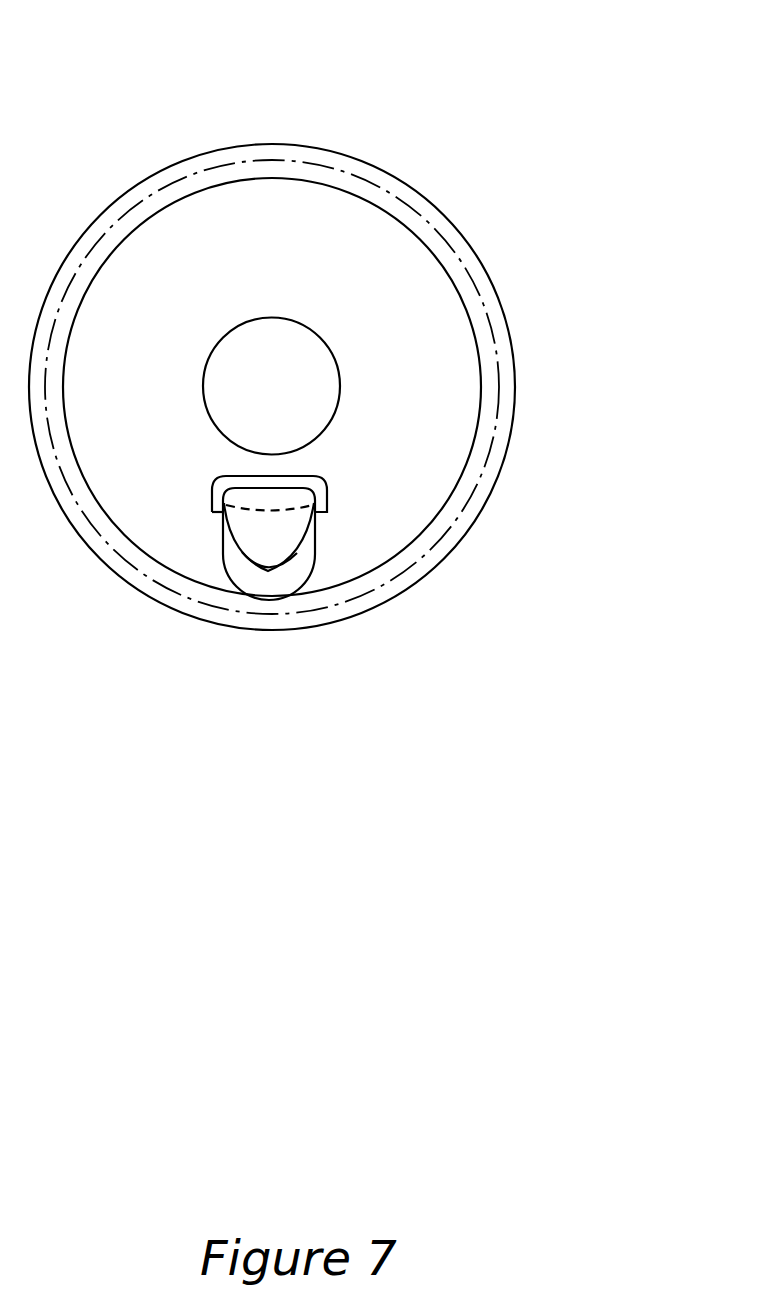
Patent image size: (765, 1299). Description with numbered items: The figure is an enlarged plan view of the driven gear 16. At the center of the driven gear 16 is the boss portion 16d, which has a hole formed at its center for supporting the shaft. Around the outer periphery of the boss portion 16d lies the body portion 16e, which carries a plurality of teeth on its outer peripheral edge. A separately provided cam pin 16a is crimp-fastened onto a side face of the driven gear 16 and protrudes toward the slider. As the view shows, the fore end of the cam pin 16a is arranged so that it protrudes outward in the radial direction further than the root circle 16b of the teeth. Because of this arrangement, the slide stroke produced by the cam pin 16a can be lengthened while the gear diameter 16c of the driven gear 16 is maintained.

The driven gear 16 is at (324, 383).
The cam pin 16a is at (268, 592).
The root circle 16b is at (170, 573).
The gear diameter 16c is at (400, 572).
The boss portion 16d is at (340, 385).
The body portion 16e is at (468, 530).